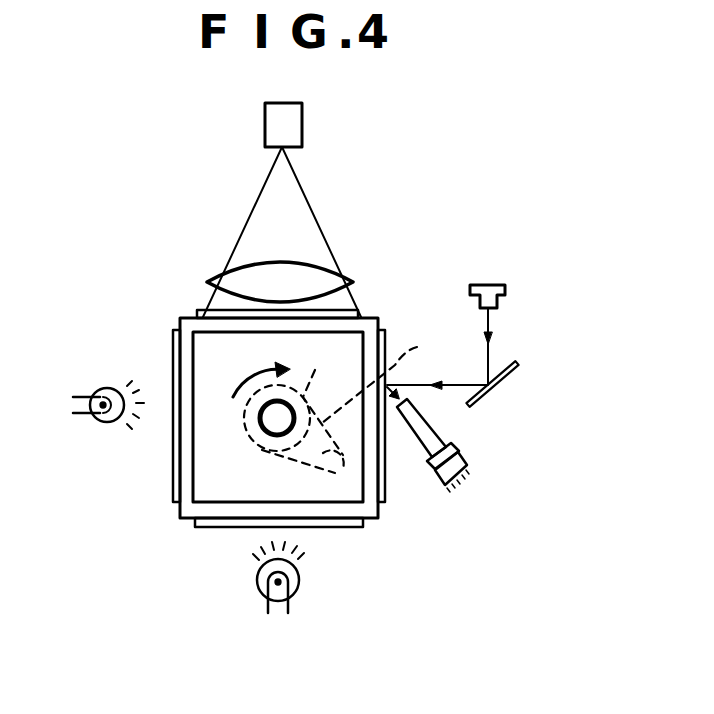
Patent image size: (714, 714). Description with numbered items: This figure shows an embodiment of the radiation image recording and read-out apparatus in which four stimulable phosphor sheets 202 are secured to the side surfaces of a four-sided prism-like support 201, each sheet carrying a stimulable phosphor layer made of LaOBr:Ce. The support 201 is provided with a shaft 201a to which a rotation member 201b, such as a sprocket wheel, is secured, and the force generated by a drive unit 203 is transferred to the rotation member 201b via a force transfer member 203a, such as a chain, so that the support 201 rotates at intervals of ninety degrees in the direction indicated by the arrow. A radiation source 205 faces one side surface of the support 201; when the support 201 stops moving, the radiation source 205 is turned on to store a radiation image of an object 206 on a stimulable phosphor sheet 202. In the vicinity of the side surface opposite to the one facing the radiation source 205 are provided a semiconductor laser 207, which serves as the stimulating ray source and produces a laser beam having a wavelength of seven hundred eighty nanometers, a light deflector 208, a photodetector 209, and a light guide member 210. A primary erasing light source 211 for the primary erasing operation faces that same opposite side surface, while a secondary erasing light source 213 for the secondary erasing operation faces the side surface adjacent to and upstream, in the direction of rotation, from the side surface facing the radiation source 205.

The support 201 is at (185, 322).
The shaft 201a is at (277, 422).
The rotation member 201b is at (291, 369).
The stimulable phosphor sheet 202 is at (385, 330).
The drive unit 203 is at (342, 470).
The force transfer member 203a is at (394, 370).
The radiation source 205 is at (303, 123).
The object 206 is at (302, 263).
The semiconductor laser 207 is at (508, 290).
The light deflector 208 is at (520, 373).
The photodetector 209 is at (455, 460).
The light guide member 210 is at (437, 430).
The primary erasing light source 211 is at (257, 582).
The secondary erasing light source 213 is at (107, 422).